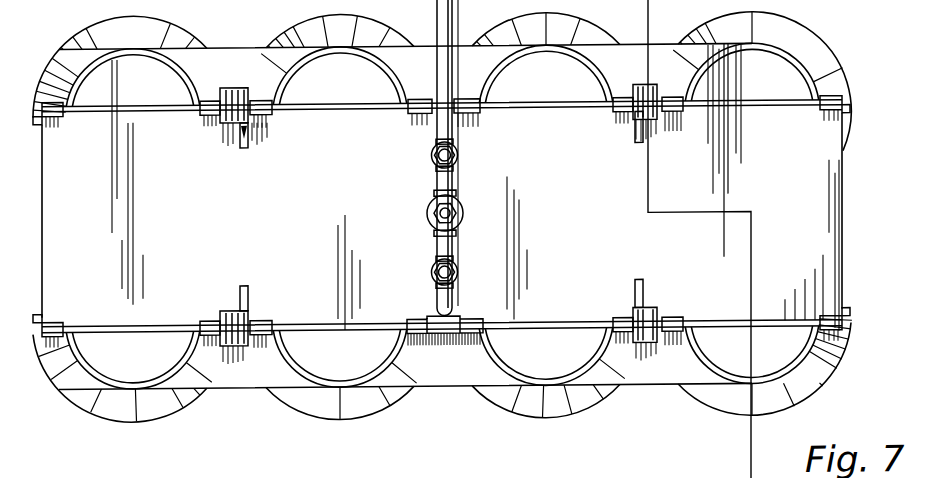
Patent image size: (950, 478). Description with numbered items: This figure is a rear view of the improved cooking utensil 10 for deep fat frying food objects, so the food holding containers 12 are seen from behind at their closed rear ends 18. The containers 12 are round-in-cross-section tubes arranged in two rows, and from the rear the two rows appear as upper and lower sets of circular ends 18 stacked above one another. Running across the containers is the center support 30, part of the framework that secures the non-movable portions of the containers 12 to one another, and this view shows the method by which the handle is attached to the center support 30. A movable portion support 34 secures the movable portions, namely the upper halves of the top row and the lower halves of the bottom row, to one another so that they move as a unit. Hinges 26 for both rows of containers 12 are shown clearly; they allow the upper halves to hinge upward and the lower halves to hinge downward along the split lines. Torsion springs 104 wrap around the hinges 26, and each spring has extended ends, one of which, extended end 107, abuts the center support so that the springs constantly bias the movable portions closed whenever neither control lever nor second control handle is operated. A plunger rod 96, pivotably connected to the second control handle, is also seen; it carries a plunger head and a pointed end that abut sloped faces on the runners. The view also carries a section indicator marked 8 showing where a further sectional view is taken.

The cooking utensil 10 is at (450, 239).
The food holding containers 12 is at (276, 2).
The closed rear ends 18 is at (137, 55).
The hinges 26 is at (55, 123).
The center support 30 is at (243, 234).
The movable portion support 34 is at (458, 370).
The plunger rod 96 is at (455, 201).
The torsion springs 104 is at (247, 134).
The extended end 107 is at (240, 142).
The section line 8- 8 is at (715, 471).